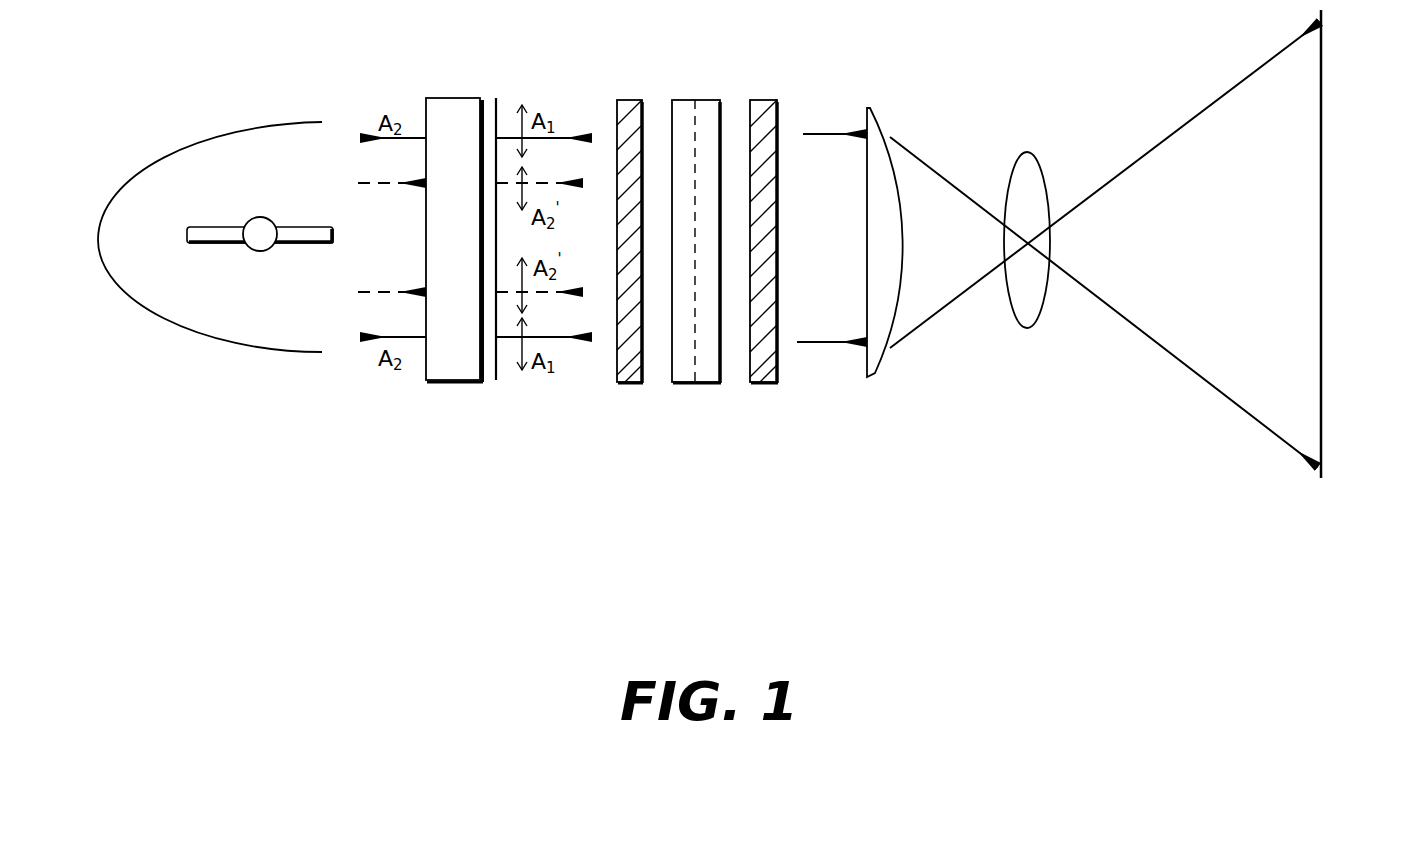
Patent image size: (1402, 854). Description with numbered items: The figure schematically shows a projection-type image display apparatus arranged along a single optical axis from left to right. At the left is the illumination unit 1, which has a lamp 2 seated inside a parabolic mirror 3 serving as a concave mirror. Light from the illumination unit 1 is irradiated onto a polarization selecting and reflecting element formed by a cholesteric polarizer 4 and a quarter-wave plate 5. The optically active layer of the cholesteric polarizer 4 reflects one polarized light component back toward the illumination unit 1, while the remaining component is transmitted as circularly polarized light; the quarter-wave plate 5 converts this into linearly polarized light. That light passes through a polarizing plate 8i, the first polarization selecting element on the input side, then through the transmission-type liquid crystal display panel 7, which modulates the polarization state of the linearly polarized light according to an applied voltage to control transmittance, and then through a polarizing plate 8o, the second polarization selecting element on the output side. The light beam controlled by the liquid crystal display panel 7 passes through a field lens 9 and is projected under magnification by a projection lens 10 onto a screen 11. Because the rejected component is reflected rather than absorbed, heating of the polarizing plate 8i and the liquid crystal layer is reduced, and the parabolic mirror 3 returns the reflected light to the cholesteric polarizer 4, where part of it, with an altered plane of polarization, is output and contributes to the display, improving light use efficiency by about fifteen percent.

The illumination unit 1 is at (353, 410).
The lamp 2 is at (230, 228).
The parabolic mirror 3 is at (243, 128).
The cholesteric polarizer 4 is at (447, 382).
The quarter-wave plate 5 is at (497, 365).
The transmission-type liquid crystal display panel 7 is at (692, 384).
The polarizing plate 8i is at (627, 384).
The polarizing plate 8o is at (760, 384).
The field lens 9 is at (876, 377).
The projection lens 10 is at (1030, 328).
The screen 11 is at (1323, 418).